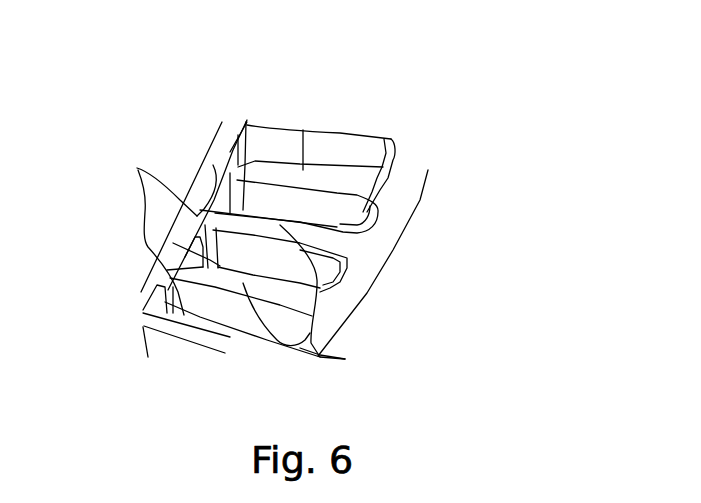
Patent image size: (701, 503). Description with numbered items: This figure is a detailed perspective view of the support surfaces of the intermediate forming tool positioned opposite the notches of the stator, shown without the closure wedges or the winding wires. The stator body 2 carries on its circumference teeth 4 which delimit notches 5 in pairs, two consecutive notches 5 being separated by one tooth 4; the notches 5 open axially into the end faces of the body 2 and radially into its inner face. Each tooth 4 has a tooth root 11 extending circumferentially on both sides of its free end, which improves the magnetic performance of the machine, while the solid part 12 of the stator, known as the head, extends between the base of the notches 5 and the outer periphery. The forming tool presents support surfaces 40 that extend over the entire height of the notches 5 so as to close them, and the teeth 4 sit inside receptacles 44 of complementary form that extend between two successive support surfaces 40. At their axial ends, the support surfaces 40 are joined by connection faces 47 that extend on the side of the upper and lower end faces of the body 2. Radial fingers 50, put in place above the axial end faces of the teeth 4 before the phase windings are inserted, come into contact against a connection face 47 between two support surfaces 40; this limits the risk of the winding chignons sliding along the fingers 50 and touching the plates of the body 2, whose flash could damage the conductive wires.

The body 2 is at (415, 170).
The tooth 4 is at (313, 127).
The notch 5 is at (341, 207).
The tooth root 11 is at (284, 148).
The solid part 12 is at (382, 252).
The support surface 40 is at (208, 280).
The receptacle 44 is at (213, 165).
The connection face 47 is at (137, 168).
The radial finger 50 is at (345, 359).